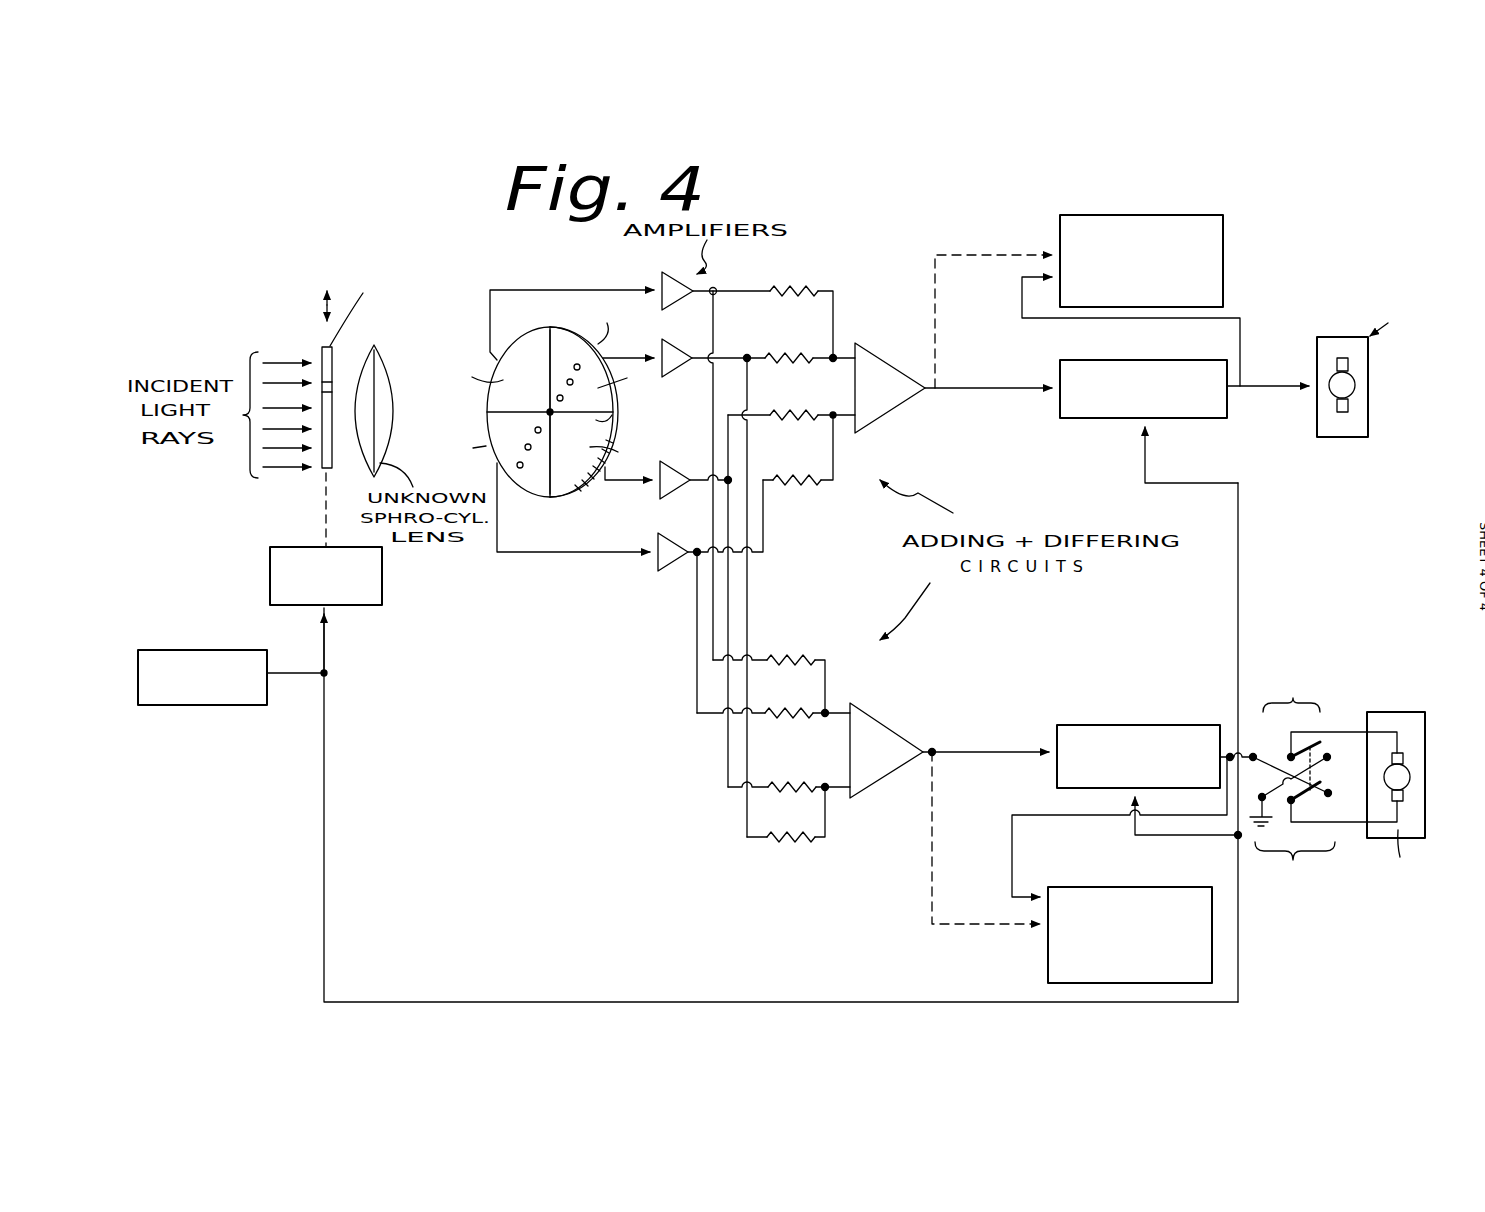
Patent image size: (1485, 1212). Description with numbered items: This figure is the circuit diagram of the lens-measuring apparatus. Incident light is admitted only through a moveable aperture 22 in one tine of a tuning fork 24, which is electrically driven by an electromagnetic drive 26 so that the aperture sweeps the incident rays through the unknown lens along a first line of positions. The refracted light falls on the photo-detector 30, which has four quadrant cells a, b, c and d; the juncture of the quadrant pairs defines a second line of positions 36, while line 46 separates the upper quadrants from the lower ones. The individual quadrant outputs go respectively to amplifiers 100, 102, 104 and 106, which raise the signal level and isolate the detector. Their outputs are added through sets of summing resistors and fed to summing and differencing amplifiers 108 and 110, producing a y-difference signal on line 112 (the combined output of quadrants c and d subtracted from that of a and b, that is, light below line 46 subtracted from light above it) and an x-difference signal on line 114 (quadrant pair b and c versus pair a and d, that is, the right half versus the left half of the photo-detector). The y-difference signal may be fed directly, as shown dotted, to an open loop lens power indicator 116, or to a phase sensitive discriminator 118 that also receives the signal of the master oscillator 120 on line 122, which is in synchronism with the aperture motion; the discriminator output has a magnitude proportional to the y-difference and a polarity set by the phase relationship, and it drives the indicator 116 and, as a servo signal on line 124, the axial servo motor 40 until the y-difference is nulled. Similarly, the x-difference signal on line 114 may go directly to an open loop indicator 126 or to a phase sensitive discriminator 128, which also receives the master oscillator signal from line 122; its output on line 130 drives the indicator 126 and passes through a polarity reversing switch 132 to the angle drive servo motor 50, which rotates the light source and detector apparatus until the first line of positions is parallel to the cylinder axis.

The aperture 22 is at (322, 347).
The tuning fork 24 is at (325, 468).
The electromagnetic drive 26 is at (382, 606).
The photo-detector 30 is at (499, 335).
The second line of positions 36 is at (548, 357).
The line 46 is at (612, 419).
The amplifier 100 is at (667, 272).
The amplifier 102 is at (690, 340).
The amplifier 104 is at (687, 458).
The amplifier 106 is at (675, 528).
The summing and differencing amplifier 108 is at (892, 396).
The summing and differencing amplifier 110 is at (882, 712).
The line 112 is at (975, 403).
The line 114 is at (1012, 778).
The open loop lens power indicator 116 is at (1182, 193).
The phase sensitive discriminator 118 is at (1142, 360).
The master oscillator 120 is at (232, 730).
The line 122 is at (1240, 522).
The line 124 is at (1265, 390).
The open loop indicator 126 is at (1048, 958).
The phase sensitive discriminator 128 is at (1148, 725).
The line 130 is at (1256, 754).
The polarity reversing switch 132 is at (1295, 872).
The axial servo motor 40 is at (1428, 694).
The angle drive servo motor 50 is at (1357, 423).